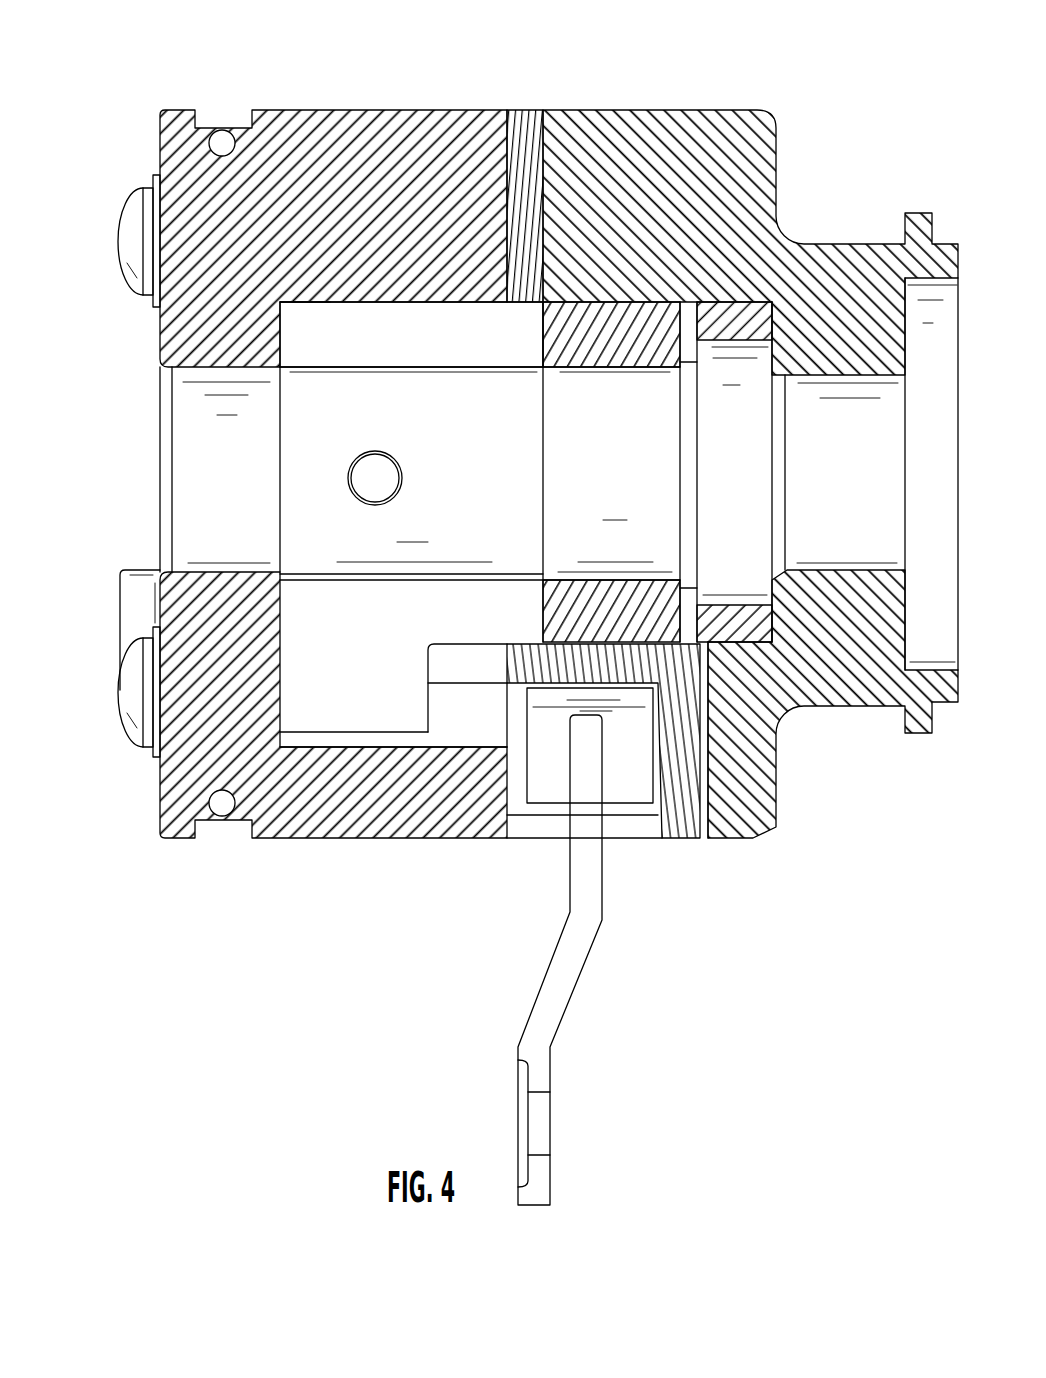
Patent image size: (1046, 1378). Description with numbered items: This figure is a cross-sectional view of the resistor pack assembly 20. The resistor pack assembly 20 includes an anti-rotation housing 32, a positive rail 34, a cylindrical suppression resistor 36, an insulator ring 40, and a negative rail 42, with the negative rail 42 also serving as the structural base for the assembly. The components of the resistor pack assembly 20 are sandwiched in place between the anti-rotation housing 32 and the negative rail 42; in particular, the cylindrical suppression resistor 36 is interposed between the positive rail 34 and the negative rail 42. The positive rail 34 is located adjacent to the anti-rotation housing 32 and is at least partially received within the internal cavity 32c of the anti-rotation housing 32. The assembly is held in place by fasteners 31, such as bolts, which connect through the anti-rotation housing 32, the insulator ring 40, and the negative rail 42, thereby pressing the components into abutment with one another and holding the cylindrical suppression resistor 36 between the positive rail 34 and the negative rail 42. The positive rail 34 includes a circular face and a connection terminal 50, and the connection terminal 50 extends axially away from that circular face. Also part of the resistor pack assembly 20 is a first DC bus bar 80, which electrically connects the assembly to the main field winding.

The resistor pack assembly 20 is at (96, 137).
The fasteners 31 is at (133, 232).
The anti-rotation housing 32 is at (360, 125).
The internal cavity 32c is at (320, 313).
The positive rail 34 is at (433, 323).
The cylindrical suppression resistor 36 is at (623, 323).
The insulator ring 40 is at (528, 130).
The negative rail 42 is at (838, 680).
The connection terminal 50 is at (455, 625).
The first DC bus bar 80 is at (570, 962).